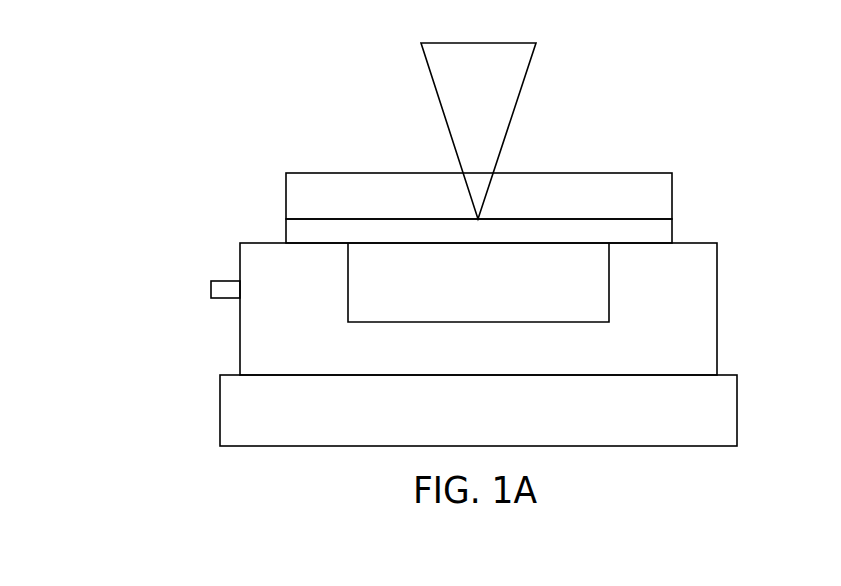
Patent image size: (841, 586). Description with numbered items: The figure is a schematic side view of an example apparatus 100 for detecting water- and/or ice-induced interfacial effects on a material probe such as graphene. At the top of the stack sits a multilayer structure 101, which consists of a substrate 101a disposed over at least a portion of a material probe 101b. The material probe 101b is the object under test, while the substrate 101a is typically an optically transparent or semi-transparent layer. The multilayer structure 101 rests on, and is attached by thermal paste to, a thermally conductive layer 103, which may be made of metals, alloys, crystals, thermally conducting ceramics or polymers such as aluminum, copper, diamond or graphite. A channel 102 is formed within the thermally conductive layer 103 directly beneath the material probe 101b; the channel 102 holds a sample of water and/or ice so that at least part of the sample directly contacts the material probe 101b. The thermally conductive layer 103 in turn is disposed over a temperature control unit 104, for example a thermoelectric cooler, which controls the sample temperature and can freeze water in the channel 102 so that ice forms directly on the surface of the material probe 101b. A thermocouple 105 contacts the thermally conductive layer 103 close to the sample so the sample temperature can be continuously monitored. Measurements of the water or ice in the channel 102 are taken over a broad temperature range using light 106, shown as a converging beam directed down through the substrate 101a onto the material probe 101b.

The apparatus 100 is at (277, 103).
The multilayer structure 101 is at (757, 170).
The substrate 101a is at (672, 193).
The material probe 101b is at (672, 232).
The channel 102 is at (609, 283).
The thermally conductive layer 103 is at (717, 338).
The temperature control unit 104 is at (737, 418).
The thermocouple 105 is at (211, 282).
The light 106 is at (518, 100).